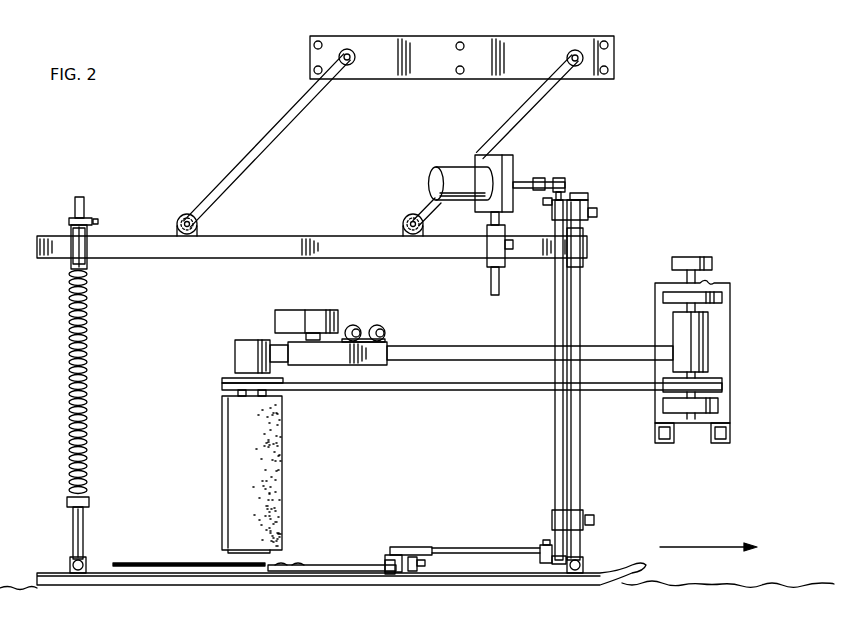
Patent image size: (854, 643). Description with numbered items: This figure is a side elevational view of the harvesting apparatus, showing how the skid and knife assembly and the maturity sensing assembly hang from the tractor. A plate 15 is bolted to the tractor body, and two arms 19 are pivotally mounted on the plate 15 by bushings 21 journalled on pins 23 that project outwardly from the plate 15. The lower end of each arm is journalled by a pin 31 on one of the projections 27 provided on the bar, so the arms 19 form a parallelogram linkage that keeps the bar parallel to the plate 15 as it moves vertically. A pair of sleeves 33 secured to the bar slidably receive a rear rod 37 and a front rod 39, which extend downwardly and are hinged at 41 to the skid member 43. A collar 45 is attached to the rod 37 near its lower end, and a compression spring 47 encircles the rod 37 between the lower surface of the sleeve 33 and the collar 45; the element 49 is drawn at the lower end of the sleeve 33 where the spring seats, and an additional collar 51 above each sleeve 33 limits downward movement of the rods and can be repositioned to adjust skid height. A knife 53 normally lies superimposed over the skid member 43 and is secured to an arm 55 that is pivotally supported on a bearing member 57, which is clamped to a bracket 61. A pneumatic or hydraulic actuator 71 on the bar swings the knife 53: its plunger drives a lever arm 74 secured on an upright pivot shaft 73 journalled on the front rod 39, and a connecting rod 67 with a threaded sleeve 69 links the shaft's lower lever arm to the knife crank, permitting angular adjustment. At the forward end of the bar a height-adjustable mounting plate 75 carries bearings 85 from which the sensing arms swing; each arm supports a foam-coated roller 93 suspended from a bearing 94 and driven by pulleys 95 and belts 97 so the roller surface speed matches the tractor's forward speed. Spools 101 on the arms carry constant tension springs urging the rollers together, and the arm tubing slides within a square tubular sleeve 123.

The plate 15 is at (504, 48).
The arms 19 is at (287, 117).
The bushings 21 is at (348, 49).
The pins 23 is at (355, 57).
The projections 27 is at (200, 232).
The pin 31 is at (178, 221).
The sleeves 33 is at (72, 250).
The rod 37 is at (82, 530).
The front rod 39 is at (578, 494).
The hinge 41 is at (70, 567).
The skid member 43 is at (230, 582).
The collar 45 is at (86, 501).
The compression spring 47 is at (82, 405).
The sleeve 49 is at (88, 268).
The collar 51 is at (74, 218).
The knife 53 is at (172, 563).
The arm 55 is at (346, 565).
The bearing member 57 is at (386, 553).
The bracket 61 is at (413, 577).
The connecting rod 67 is at (486, 552).
The threaded sleeve 69 is at (424, 533).
The actuator 71 is at (454, 170).
The pivot shaft 73 is at (556, 296).
The lever arm 74 is at (562, 168).
The mounting plate 75 is at (664, 310).
The bearings 85 is at (700, 344).
The roller 93 is at (222, 437).
The bearing 94 is at (238, 352).
The pulleys 95 is at (222, 383).
The belts 97 is at (360, 388).
The spools 101 is at (280, 318).
The tubular sleeve 123 is at (388, 362).